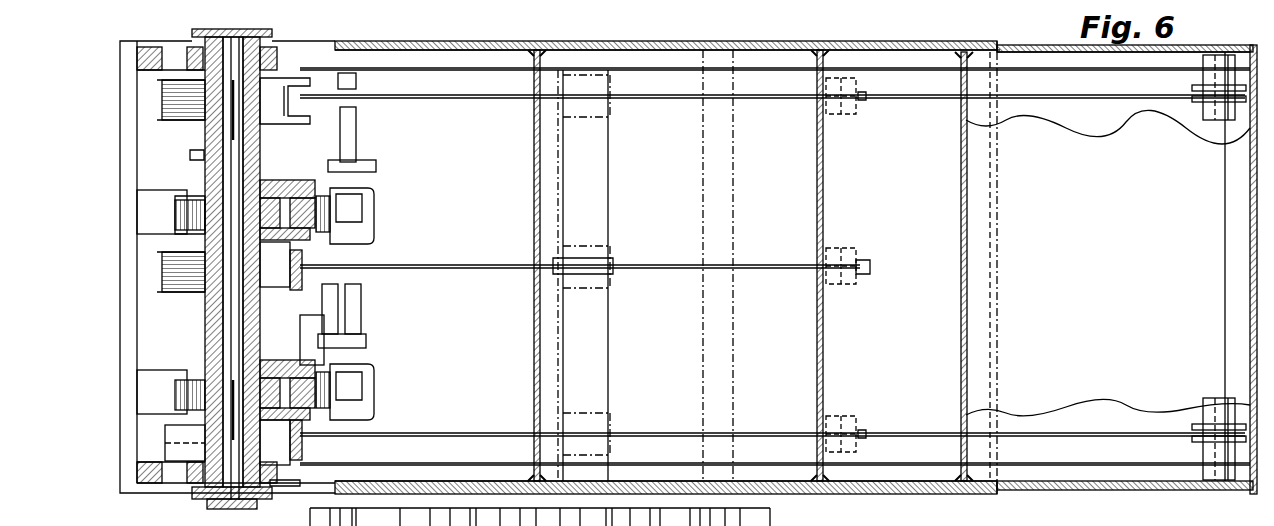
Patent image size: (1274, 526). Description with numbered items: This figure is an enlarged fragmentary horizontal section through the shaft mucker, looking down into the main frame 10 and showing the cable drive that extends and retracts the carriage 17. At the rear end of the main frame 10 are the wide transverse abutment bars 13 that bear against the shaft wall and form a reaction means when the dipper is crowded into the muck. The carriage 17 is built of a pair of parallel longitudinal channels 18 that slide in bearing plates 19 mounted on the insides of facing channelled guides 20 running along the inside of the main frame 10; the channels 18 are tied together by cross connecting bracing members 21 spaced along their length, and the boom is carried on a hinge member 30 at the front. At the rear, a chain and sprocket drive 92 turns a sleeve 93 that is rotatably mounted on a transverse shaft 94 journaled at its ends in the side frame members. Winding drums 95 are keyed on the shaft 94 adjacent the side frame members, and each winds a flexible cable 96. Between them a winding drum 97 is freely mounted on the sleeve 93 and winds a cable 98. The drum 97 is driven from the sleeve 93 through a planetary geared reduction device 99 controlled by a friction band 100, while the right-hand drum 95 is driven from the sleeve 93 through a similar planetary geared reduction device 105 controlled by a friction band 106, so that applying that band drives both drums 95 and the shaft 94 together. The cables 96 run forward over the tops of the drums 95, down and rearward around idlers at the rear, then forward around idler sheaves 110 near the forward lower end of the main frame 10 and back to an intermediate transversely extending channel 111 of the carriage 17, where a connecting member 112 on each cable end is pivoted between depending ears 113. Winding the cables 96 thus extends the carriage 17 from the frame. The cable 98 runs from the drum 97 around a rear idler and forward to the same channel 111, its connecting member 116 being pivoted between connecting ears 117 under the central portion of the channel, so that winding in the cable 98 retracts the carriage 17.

The main frame 10 is at (636, 41).
The abutment bars 13 is at (120, 458).
The carriage 17 is at (1138, 490).
The channels 18 is at (1120, 70).
The bearing plates 19 is at (1000, 45).
The channelled guides 20 is at (962, 41).
The cross connecting bracing members 21 is at (534, 378).
The hinge member 30 is at (978, 494).
The chain and sprocket drive 92 is at (190, 156).
The sleeve 93 is at (204, 178).
The transverse shaft 94 is at (260, 30).
The winding drums 95 is at (312, 116).
The flexible cable 96 is at (502, 98).
The winding drum 97 is at (190, 292).
The cable 98 is at (480, 265).
The planetary geared reduction device 99 is at (290, 198).
The friction band 100 is at (370, 200).
The planetary geared reduction device 105 is at (294, 350).
The friction band 106 is at (376, 376).
The idler sheaves 110 is at (1200, 100).
The intermediate transversely extending channel 111 is at (608, 192).
The connecting member 112 is at (866, 100).
The depending ears 113 is at (604, 118).
The connecting member 116 is at (866, 268).
The connecting ears 117 is at (604, 284).